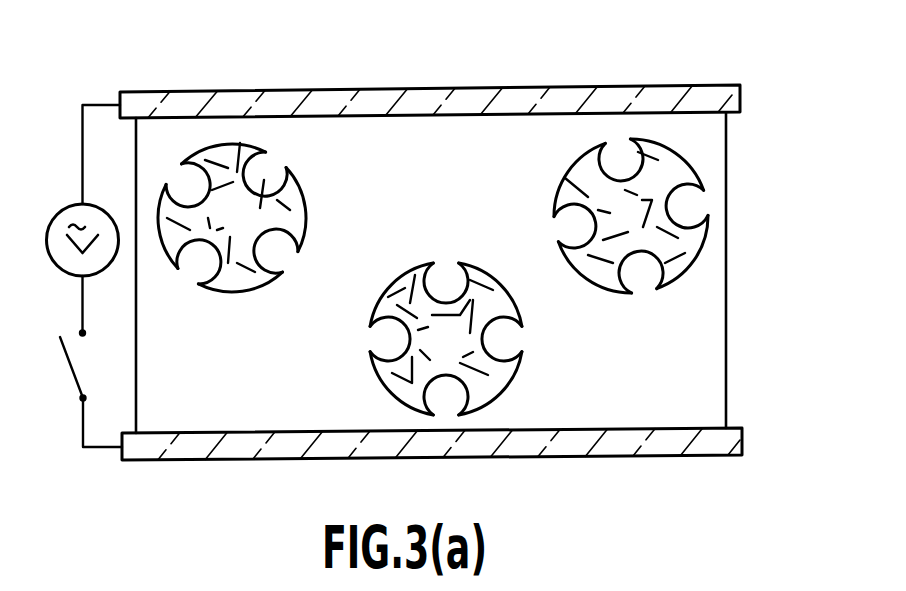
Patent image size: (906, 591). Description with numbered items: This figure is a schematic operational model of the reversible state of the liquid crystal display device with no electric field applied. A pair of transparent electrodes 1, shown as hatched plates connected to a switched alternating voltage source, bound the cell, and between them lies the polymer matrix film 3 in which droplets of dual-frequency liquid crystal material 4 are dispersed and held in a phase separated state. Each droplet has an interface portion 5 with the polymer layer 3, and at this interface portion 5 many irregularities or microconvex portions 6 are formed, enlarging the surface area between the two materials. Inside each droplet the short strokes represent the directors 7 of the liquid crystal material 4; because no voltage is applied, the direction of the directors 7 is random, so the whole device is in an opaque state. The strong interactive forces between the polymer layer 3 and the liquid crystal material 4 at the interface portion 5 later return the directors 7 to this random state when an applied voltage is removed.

The transparent electrode 1 is at (374, 92).
The polymer matrix film 3 is at (721, 356).
The dual-frequency liquid crystal material 4 is at (222, 292).
The interface portion 5 is at (306, 218).
The microconvex portion 6 is at (286, 258).
The director 7 is at (304, 192).